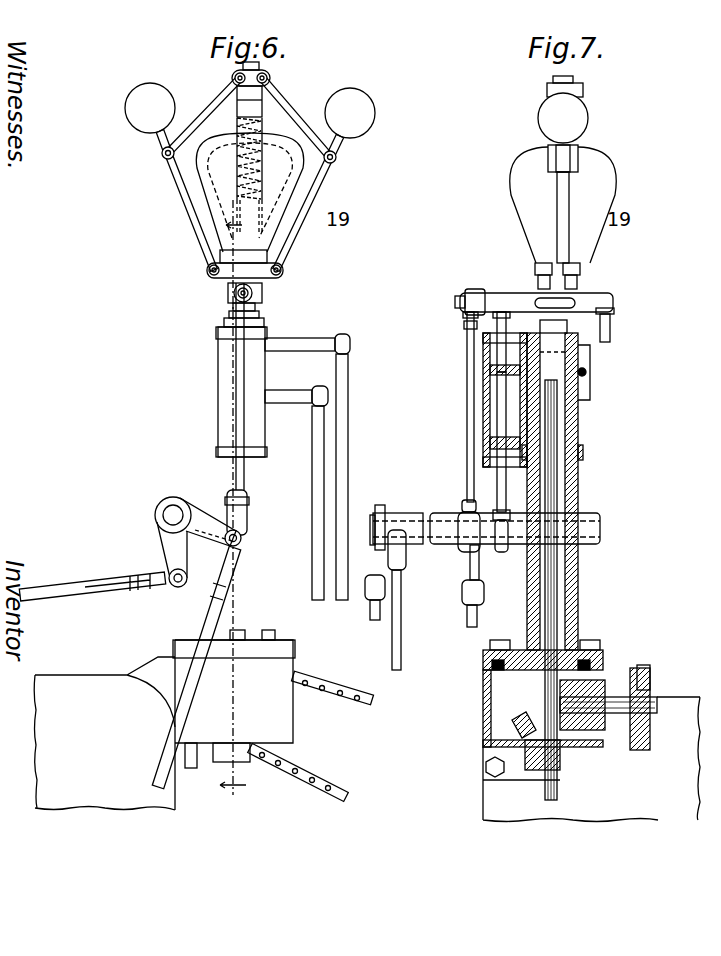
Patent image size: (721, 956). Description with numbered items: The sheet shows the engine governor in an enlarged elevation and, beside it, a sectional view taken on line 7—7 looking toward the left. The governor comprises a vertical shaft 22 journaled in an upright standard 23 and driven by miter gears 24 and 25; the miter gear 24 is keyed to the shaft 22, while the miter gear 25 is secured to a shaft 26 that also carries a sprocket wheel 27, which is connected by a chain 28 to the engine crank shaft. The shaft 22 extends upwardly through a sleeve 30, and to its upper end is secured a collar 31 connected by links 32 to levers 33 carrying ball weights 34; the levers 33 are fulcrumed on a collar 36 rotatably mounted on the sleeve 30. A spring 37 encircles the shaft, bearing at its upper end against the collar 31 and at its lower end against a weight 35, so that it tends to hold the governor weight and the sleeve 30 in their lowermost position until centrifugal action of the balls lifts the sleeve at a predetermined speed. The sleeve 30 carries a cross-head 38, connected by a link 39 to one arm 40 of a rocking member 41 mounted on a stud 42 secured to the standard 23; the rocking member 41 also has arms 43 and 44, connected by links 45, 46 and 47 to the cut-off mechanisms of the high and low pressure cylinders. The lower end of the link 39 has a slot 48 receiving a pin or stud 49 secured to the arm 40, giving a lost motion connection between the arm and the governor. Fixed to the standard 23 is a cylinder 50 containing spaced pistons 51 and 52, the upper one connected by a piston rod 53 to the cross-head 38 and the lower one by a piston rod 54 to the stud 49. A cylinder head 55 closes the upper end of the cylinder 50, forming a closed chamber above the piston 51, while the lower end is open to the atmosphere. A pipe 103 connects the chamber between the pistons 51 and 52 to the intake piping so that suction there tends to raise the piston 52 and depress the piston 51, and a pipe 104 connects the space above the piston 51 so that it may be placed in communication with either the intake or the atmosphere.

In FIG. 6, the section line 7 is at (233, 506).
In FIG. 7, the vertical shaft 22 is at (560, 482).
In FIG. 6, the upright standard 23 is at (258, 477).
In FIG. 7, the upright standard 23 is at (578, 425).
In FIG. 7, the miter gear 24 is at (524, 722).
In FIG. 7, the miter gear 25 is at (542, 776).
In FIG. 7, the shaft 26 is at (656, 712).
In FIG. 7, the sprocket wheel 27 is at (650, 688).
In FIG. 6, the chain 28 is at (346, 700).
In FIG. 7, the chain 28 is at (650, 670).
In FIG. 7, the sleeve 30 is at (566, 330).
In FIG. 6, the collar 31 is at (259, 66).
In FIG. 7, the collar 31 is at (576, 80).
In FIG. 6, the links 32 is at (228, 92).
In FIG. 6, the levers 33 is at (188, 203).
In FIG. 7, the levers 33 is at (569, 190).
In FIG. 6, the ball weights 34 is at (133, 117).
In FIG. 7, the ball weights 34 is at (588, 118).
In FIG. 6, the weight 35 is at (199, 176).
In FIG. 7, the weight 35 is at (526, 212).
In FIG. 6, the collar 36 is at (224, 273).
In FIG. 6, the spring 37 is at (240, 132).
In FIG. 7, the cross-head 38 is at (590, 301).
In FIG. 6, the link 39 is at (236, 360).
In FIG. 7, the link 39 is at (470, 345).
In FIG. 6, the arm 40 is at (211, 518).
In FIG. 7, the arm 40 is at (486, 540).
In FIG. 7, the rocking member 41 is at (414, 535).
In FIG. 6, the stud 42 is at (172, 505).
In FIG. 7, the stud 42 is at (381, 510).
In FIG. 6, the arm 43 is at (211, 535).
In FIG. 6, the arm 44 is at (161, 550).
In FIG. 6, the link 45 is at (212, 621).
In FIG. 7, the link 45 is at (394, 645).
In FIG. 6, the link 46 is at (98, 596).
In FIG. 7, the link 46 is at (369, 612).
In FIG. 6, the link 47 is at (48, 590).
In FIG. 7, the link 47 is at (473, 620).
In FIG. 6, the slot 48 is at (248, 520).
In FIG. 6, the pin or stud 49 is at (242, 537).
In FIG. 7, the pin or stud 49 is at (460, 515).
In FIG. 7, the cylinder 50 is at (488, 408).
In FIG. 7, the piston 51 is at (492, 371).
In FIG. 7, the piston 52 is at (492, 442).
In FIG. 7, the piston rod 53 is at (506, 325).
In FIG. 7, the piston rod 54 is at (500, 475).
In FIG. 7, the cylinder head 55 is at (483, 299).
In FIG. 6, the pipe 103 is at (297, 394).
In FIG. 6, the pipe 104 is at (315, 344).